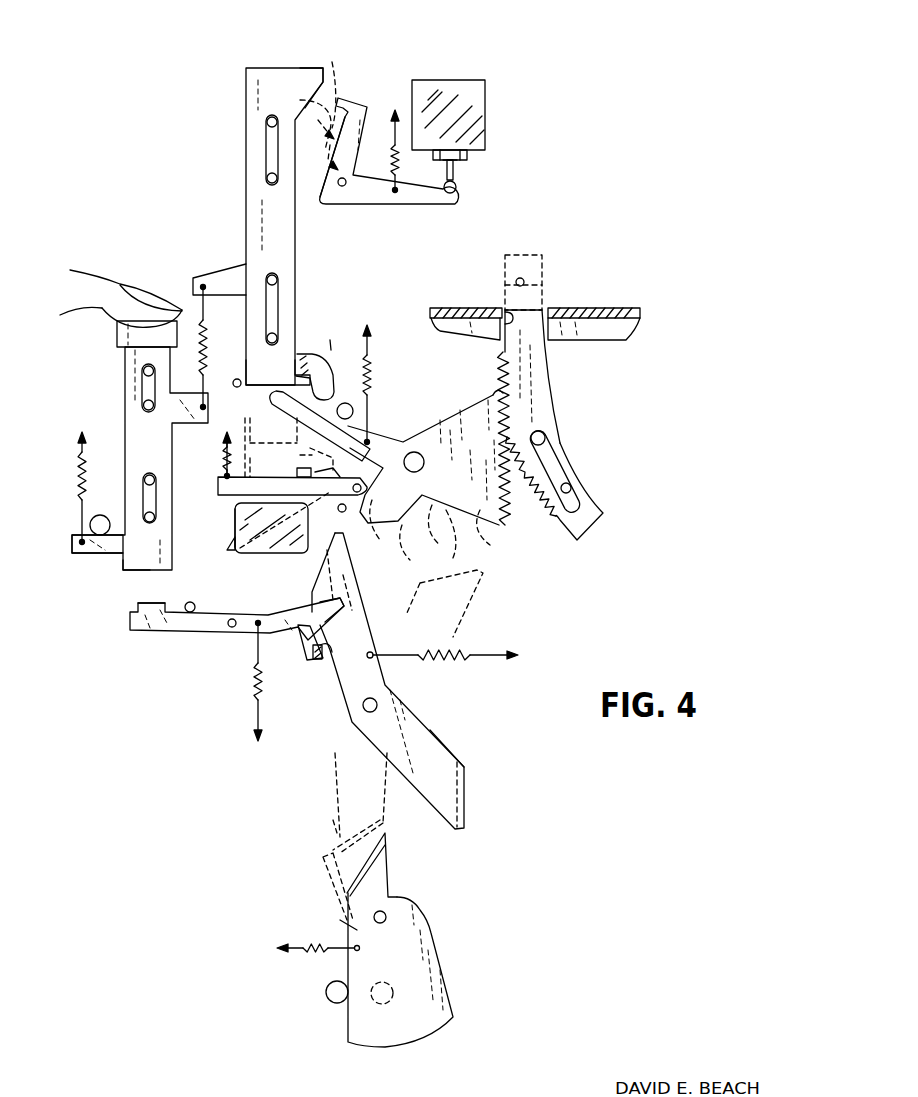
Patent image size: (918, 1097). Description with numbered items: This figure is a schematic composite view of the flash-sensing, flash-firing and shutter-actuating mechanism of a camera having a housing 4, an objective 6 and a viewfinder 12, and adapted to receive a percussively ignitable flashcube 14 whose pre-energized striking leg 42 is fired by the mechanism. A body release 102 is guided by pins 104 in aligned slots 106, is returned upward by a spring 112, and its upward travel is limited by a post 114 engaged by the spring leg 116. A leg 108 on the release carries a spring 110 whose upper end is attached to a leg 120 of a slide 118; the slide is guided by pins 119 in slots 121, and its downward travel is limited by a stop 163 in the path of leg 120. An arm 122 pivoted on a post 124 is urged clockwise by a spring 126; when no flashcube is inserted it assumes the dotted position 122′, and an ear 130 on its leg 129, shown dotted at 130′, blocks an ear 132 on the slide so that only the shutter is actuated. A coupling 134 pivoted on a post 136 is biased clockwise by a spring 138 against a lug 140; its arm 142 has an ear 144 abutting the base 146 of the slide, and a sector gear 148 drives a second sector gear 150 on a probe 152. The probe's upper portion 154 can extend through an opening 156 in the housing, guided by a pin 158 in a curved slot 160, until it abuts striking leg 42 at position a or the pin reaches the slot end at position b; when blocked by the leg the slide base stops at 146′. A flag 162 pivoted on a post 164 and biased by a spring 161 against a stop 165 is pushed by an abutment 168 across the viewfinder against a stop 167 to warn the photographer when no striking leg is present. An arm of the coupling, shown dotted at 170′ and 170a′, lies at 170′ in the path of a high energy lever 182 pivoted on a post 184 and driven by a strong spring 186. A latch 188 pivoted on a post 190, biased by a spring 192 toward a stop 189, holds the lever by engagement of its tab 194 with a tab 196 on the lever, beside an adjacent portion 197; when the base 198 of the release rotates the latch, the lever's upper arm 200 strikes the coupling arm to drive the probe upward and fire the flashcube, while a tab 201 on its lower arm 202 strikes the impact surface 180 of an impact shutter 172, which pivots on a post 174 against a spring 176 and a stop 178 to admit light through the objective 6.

The housing 4 is at (600, 313).
The objective 6 is at (388, 982).
The viewfinder 12 is at (282, 552).
The flashcube 14 is at (456, 98).
The striking leg 42 is at (526, 283).
The body release 102 is at (143, 428).
The pins 104 is at (143, 406).
The slots 106 is at (143, 372).
The leg 108 is at (238, 388).
The spring 110 is at (200, 298).
The spring 112 is at (78, 470).
The post 114 is at (100, 514).
The spring leg 116 is at (80, 550).
The slide 118 is at (267, 218).
The pins 119 is at (267, 178).
The leg 120 is at (217, 282).
The slots 121 is at (266, 122).
The arm 122 is at (334, 183).
The arm position 122′ is at (310, 102).
The post 124 is at (344, 188).
The spring 126 is at (392, 140).
The leg 129 is at (327, 152).
The ear 130 is at (354, 112).
The lever position 130′ is at (334, 75).
The ear 132 is at (313, 78).
The coupling 134 is at (449, 415).
The post 136 is at (413, 451).
The spring 138 is at (372, 350).
The lug 140 is at (342, 404).
The arm 142 is at (337, 411).
The ear 144 is at (278, 400).
The base 146 is at (262, 386).
The slide base position 146′ is at (255, 447).
The sector gear 148 is at (497, 398).
The second sector gear 150 is at (565, 532).
The probe 152 is at (552, 391).
The upper portion 154 is at (540, 335).
The opening 156 is at (505, 314).
The pin 158 is at (545, 437).
The curved slot 160 is at (572, 490).
The spring 161 is at (224, 461).
The flag 162 is at (230, 543).
The stop 163 is at (210, 356).
The post 164 is at (368, 444).
The stop 165 is at (218, 482).
The stop 167 is at (341, 513).
The abutment 168 is at (320, 356).
The arm position 170′ is at (390, 555).
The cam lobe position 170a′ is at (374, 532).
The impact shutter 172 is at (437, 936).
The post 174 is at (386, 912).
The spring 176 is at (305, 945).
The stop 178 is at (326, 992).
The impact surface 180 is at (392, 848).
The high energy lever 182 is at (417, 713).
The post 184 is at (362, 707).
The strong spring 186 is at (470, 652).
The latch 188 is at (160, 640).
The stop 189 is at (188, 600).
The post 190 is at (228, 621).
The spring 192 is at (252, 690).
The tab 194 is at (312, 605).
The tab 196 is at (316, 661).
The tab 197 is at (140, 607).
The base 198 is at (125, 570).
The upper arm 200 is at (348, 632).
The tab 201 is at (465, 805).
The lower arm 202 is at (442, 770).
The position a is at (503, 288).
The position b is at (490, 246).